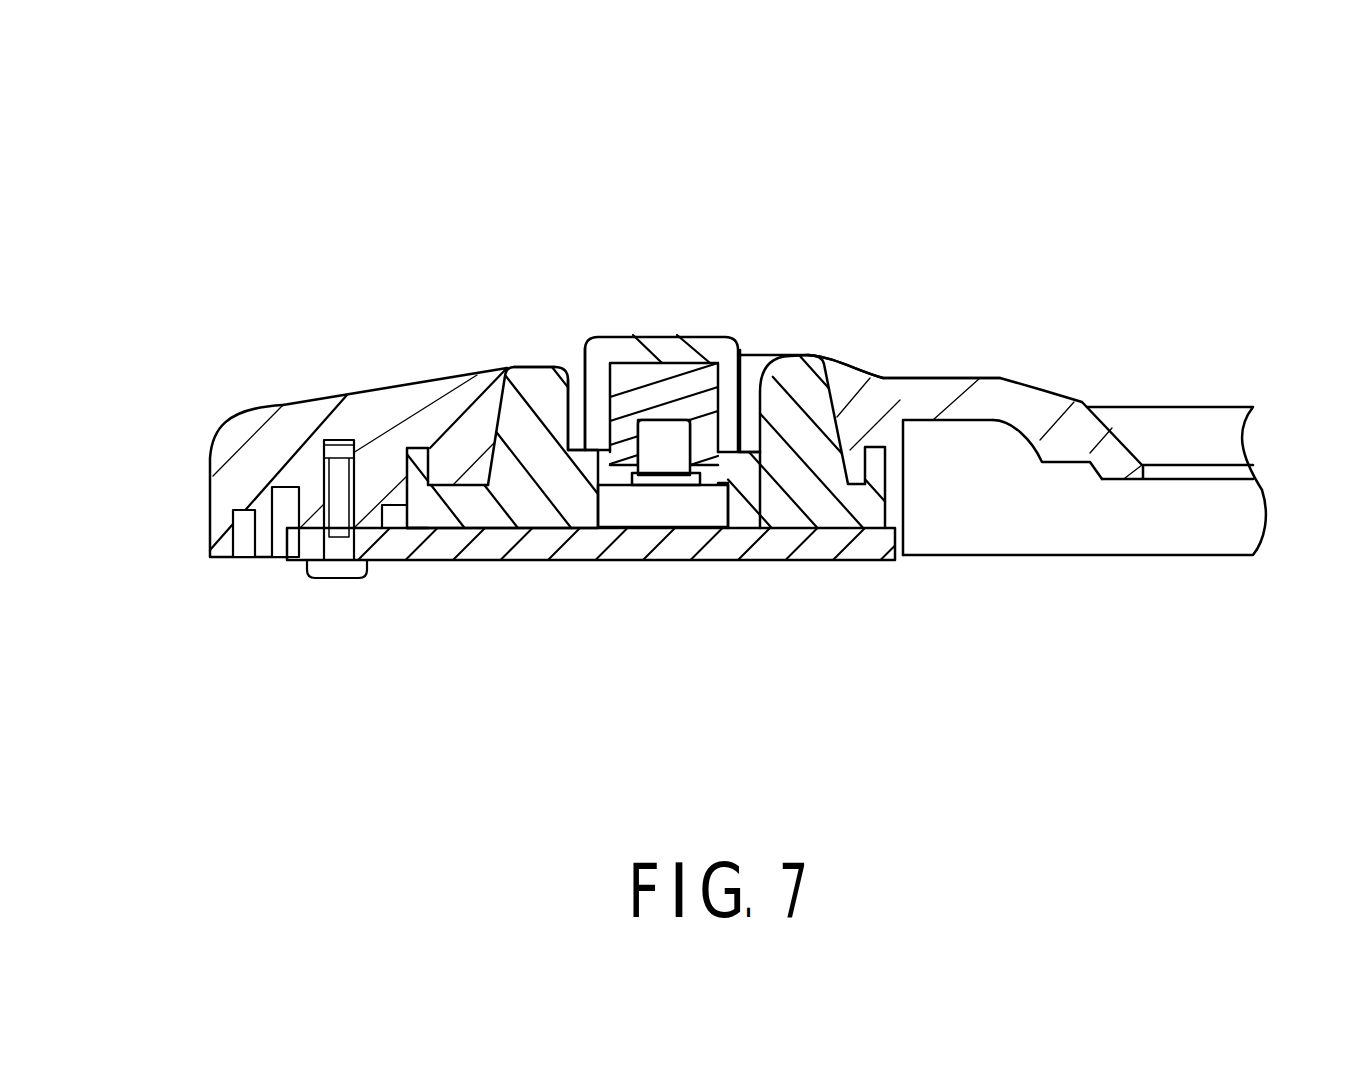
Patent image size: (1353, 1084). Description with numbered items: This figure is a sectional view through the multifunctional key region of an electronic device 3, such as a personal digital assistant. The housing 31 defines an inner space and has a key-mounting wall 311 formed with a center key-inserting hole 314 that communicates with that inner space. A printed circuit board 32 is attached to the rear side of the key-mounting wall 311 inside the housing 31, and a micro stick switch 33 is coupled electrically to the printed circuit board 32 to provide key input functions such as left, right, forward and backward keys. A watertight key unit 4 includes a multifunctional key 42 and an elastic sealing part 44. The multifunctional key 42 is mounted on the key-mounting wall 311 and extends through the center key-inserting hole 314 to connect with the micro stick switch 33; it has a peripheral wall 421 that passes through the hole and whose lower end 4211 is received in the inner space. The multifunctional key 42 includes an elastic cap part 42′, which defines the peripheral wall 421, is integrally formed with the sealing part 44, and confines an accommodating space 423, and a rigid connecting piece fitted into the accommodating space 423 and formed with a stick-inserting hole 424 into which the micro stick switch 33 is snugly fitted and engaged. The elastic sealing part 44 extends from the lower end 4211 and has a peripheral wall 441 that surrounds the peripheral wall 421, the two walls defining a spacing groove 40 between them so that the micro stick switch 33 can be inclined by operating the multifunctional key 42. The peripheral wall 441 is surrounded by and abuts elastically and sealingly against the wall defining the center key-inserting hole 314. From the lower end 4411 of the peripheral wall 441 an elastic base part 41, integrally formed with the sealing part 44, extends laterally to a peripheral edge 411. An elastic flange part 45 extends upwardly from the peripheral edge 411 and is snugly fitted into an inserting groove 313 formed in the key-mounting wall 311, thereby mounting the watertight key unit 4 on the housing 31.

The electronic device 3 is at (1178, 392).
The housing 31 is at (1112, 458).
The key-mounting wall 311 is at (998, 427).
The inserting groove 313 is at (898, 447).
The center key-inserting hole 314 is at (862, 372).
The printed circuit board 32 is at (598, 548).
The micro stick switch 33 is at (663, 453).
The watertight key unit 4 is at (627, 340).
The spacing groove 40 is at (564, 367).
The elastic base part 41 is at (437, 470).
The peripheral edge 411 is at (360, 402).
The multifunctional key 42 is at (740, 340).
The elastic cap part 42′ is at (689, 342).
The peripheral wall 421 is at (577, 440).
The lower end 4211 is at (592, 492).
The accommodating space 423 is at (760, 470).
The stick-inserting hole 424 is at (590, 482).
The elastic sealing part 44 is at (472, 385).
The peripheral wall 441 is at (533, 380).
The lower end 4411 is at (420, 560).
The elastic flange part 45 is at (882, 478).